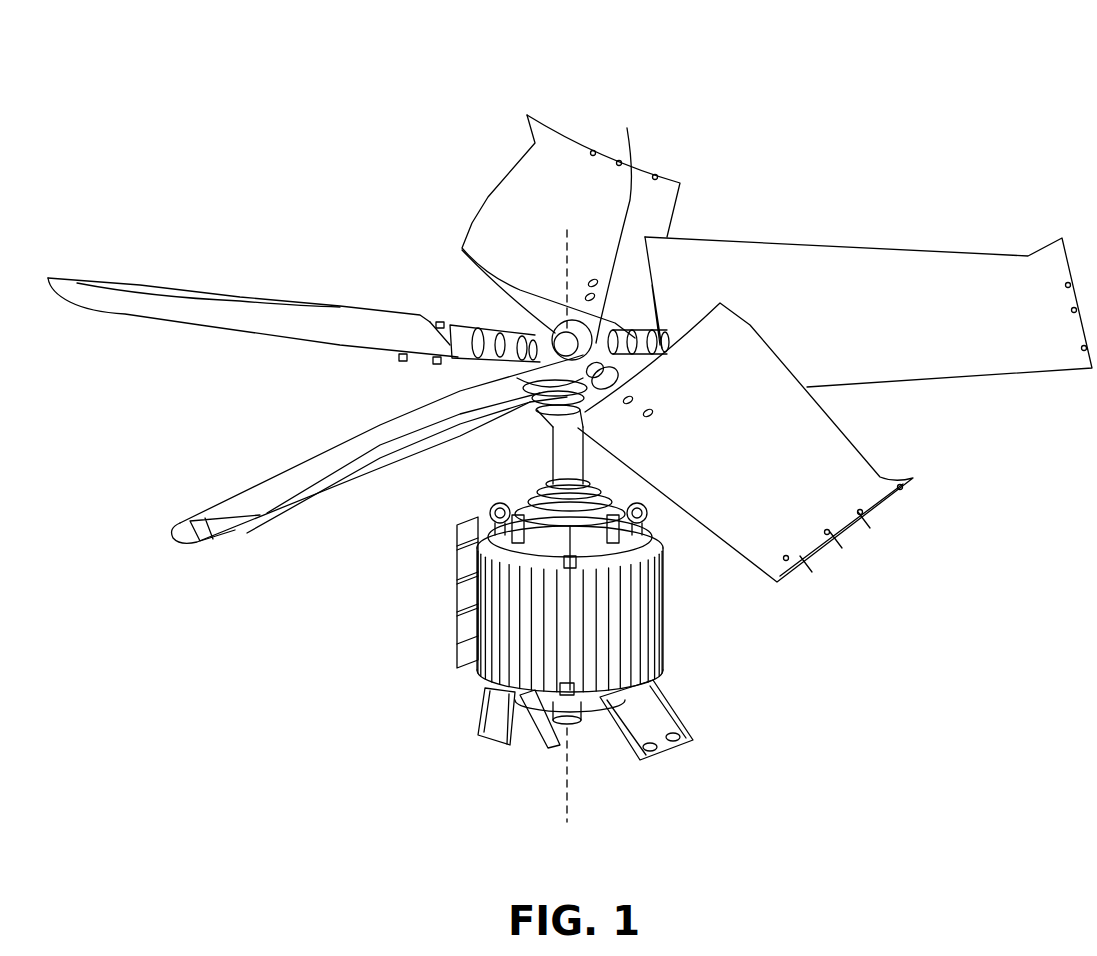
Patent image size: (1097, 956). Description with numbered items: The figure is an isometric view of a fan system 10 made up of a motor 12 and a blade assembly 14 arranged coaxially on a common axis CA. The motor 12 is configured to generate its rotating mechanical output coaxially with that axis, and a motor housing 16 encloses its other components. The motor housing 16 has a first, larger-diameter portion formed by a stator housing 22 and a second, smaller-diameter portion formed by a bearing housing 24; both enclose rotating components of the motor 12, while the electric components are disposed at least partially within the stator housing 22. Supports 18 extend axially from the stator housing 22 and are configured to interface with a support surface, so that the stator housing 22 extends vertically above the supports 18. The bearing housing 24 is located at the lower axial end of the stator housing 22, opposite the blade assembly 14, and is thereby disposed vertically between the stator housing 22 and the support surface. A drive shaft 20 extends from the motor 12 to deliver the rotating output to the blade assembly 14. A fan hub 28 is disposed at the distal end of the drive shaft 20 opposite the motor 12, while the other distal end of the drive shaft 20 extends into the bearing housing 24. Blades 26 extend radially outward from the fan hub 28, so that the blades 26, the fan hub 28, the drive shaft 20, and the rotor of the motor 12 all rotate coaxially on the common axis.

The fan system 10 is at (376, 68).
The motor 12 is at (432, 556).
The blade assembly 14 is at (460, 278).
The motor housing 16 is at (700, 634).
The supports 18 is at (523, 737).
The drive shaft 20 is at (553, 472).
The stator housing 22 is at (648, 608).
The bearing housing 24 is at (573, 712).
The blades 26 is at (730, 260).
The fan hub 28 is at (571, 226).